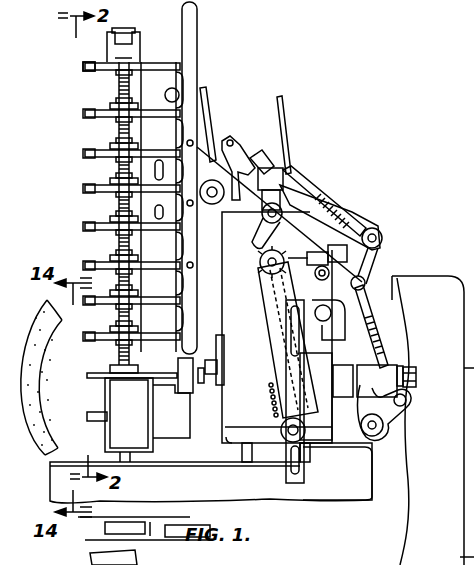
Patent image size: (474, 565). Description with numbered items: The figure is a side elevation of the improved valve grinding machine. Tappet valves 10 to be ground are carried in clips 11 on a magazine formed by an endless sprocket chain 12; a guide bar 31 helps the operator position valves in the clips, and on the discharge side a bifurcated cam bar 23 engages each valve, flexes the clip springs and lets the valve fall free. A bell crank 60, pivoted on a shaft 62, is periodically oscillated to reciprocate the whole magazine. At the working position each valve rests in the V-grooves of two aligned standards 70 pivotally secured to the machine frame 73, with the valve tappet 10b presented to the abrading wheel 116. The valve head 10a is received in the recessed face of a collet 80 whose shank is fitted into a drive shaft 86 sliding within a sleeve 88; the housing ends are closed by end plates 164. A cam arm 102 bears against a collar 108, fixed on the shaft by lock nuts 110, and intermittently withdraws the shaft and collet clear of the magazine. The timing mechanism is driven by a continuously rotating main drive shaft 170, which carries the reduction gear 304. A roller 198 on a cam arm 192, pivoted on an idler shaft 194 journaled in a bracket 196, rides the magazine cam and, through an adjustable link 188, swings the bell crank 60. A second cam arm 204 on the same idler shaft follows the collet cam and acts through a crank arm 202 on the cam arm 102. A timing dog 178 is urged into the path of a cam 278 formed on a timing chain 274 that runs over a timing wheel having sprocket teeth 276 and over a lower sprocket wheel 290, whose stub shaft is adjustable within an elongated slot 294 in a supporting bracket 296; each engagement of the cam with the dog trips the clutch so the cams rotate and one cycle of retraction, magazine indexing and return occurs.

The tappet valve 10 is at (88, 70).
The valve head 10a is at (186, 57).
The valve tappet 10b is at (84, 67).
The clip 11 is at (141, 48).
The endless sprocket chain 12 is at (118, 202).
The bifurcated cam bar 23 is at (455, 560).
The guide bar 31 is at (198, 86).
The bell crank 60 is at (231, 140).
The shaft 62 is at (262, 152).
The standard 70 is at (114, 386).
The machine frame 73 is at (129, 414).
The collet 80 is at (186, 394).
The drive shaft 86 is at (216, 375).
The sleeve 88 is at (336, 368).
The cam arm 102 is at (392, 432).
The collar 108 is at (398, 364).
The lock nuts 110 is at (408, 368).
The abrading wheel 116 is at (50, 442).
The end plate 164 is at (216, 340).
The main drive shaft 170 is at (365, 230).
The timing dog 178 is at (264, 228).
The link 188 is at (310, 192).
The cam arm 192 is at (365, 262).
The idler shaft 194 is at (326, 322).
The bracket 196 is at (352, 282).
The roller 198 is at (365, 282).
The crank arm 202 is at (380, 322).
The cam arm 204 is at (370, 292).
The timing chain 274 is at (271, 396).
The sprocket teeth 276 is at (268, 282).
The cam 278 is at (260, 262).
The lower sprocket wheel 290 is at (305, 444).
The elongated slot 294 is at (290, 470).
The supporting bracket 296 is at (308, 487).
The gear 304 is at (340, 206).